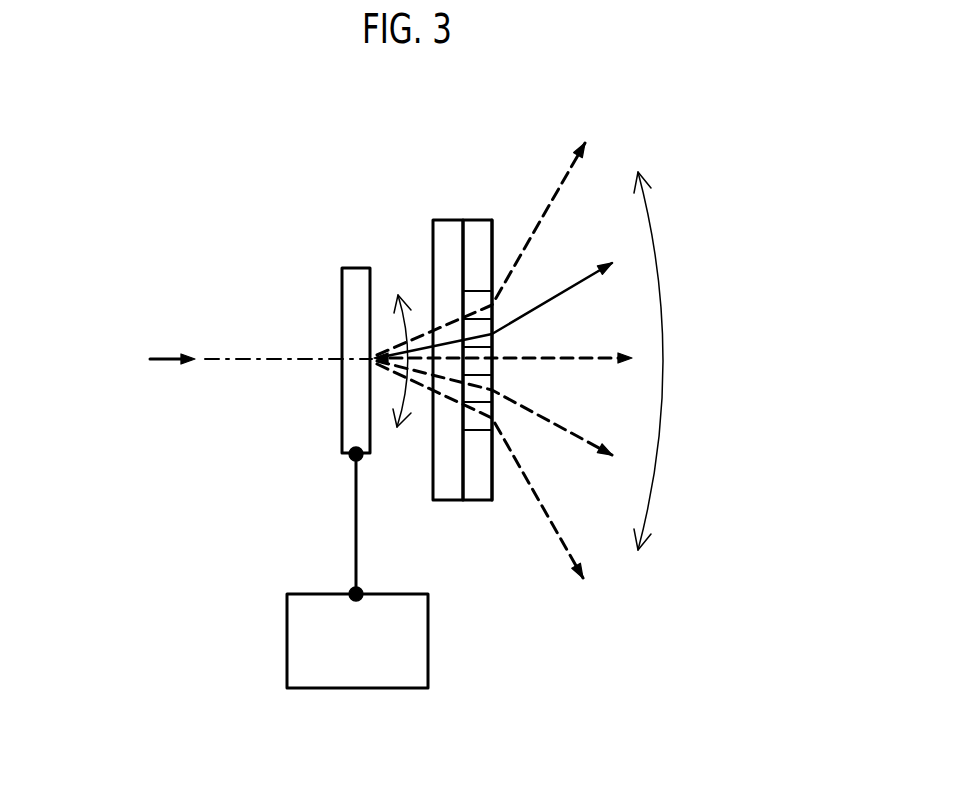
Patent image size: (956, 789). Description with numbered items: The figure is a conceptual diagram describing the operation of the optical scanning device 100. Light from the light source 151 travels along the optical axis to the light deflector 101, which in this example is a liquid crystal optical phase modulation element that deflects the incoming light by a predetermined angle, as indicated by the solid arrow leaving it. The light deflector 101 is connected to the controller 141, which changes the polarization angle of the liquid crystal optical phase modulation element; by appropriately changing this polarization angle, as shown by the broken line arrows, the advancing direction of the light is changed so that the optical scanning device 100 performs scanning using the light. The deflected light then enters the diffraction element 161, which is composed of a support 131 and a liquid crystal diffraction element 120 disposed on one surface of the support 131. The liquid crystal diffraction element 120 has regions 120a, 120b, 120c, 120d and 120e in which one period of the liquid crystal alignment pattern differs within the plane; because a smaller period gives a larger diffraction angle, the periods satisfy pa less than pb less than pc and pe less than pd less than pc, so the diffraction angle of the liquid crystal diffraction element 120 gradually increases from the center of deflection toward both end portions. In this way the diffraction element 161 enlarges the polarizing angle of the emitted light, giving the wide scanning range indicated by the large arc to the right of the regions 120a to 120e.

The optical scanning device 100 is at (148, 150).
The light deflector 101 is at (350, 268).
The liquid crystal diffraction element 120 is at (472, 219).
The region 120a is at (492, 305).
The region 120b is at (492, 333).
The region 120c is at (492, 361).
The region 120d is at (492, 388).
The region 120e is at (492, 416).
The support 131 is at (448, 219).
The controller 141 is at (287, 632).
The light source 151 is at (158, 359).
The diffraction element 161 is at (497, 462).